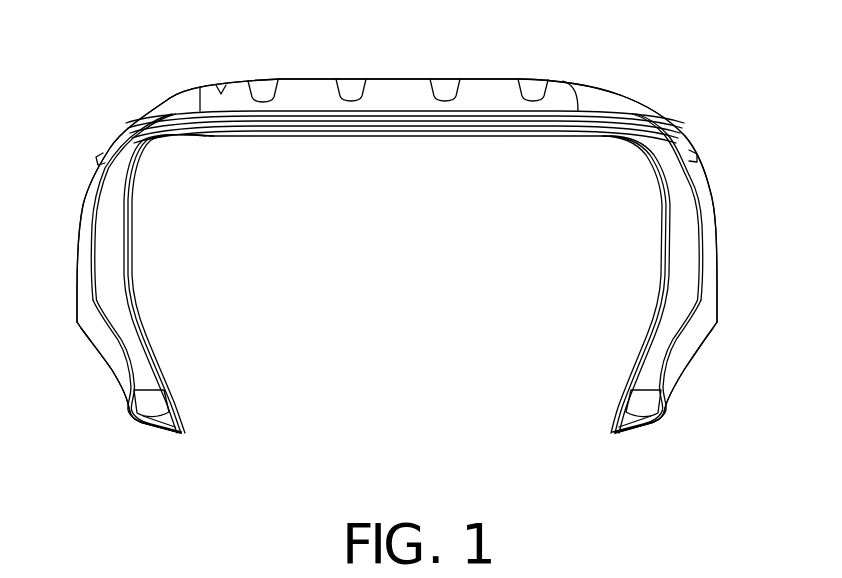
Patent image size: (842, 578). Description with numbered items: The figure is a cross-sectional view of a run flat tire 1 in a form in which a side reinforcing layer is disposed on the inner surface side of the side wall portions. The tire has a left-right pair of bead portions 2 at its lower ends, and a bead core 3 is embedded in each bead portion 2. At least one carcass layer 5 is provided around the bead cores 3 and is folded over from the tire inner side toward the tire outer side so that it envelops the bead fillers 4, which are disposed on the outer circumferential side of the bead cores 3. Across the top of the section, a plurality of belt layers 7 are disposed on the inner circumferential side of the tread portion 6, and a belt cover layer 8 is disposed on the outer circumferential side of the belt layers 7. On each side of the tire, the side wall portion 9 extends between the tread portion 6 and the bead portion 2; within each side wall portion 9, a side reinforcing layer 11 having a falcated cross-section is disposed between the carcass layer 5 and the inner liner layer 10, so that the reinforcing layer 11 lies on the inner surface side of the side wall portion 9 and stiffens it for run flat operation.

The run flat tire 1 is at (650, 88).
The bead portion 2 is at (108, 397).
The bead core 3 is at (142, 402).
The bead filler 4 is at (146, 380).
The carcass layer 5 is at (133, 168).
The tread portion 6 is at (404, 88).
The belt layer 7 is at (451, 121).
The belt cover layer 8 is at (245, 109).
The side wall portion 9 is at (66, 224).
The inner liner layer 10 is at (133, 306).
The side reinforcing layer 11 is at (100, 249).